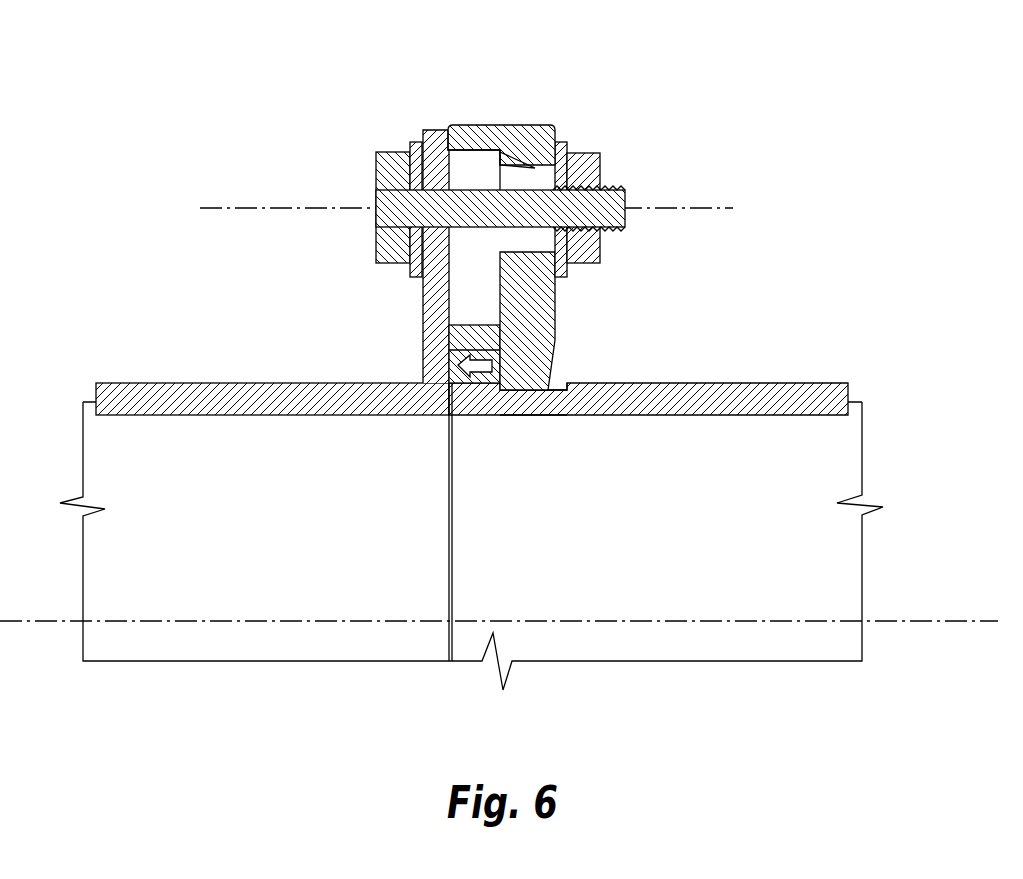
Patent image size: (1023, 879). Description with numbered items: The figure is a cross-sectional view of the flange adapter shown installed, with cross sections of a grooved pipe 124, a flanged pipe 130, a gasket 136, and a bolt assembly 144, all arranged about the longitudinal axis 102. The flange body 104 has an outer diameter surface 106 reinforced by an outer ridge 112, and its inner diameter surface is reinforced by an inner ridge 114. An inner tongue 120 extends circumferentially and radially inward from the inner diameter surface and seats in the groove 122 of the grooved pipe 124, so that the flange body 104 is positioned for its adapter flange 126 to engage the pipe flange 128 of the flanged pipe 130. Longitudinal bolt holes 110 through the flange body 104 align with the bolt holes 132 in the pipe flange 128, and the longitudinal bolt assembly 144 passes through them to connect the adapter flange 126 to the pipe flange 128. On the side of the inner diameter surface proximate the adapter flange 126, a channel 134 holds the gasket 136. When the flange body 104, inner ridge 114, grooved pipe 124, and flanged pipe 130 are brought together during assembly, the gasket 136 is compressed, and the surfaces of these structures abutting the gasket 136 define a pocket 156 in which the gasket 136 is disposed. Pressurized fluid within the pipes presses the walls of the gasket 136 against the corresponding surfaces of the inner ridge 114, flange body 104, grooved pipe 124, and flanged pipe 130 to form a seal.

The longitudinal axis 102 is at (947, 620).
The flange body 104 is at (557, 293).
The outer diameter surface 106 is at (520, 125).
The longitudinal bolt holes 110 is at (552, 127).
The outer ridge 112 is at (473, 123).
The inner ridge 114 is at (425, 335).
The inner tongue 120 is at (565, 385).
The groove 122 is at (552, 417).
The grooved pipe 124 is at (792, 383).
The adapter flange 126 is at (608, 137).
The pipe flange 128 is at (433, 127).
The flanged pipe 130 is at (133, 383).
The bolt holes 132 is at (377, 170).
The channel 134 is at (557, 328).
The gasket 136 is at (448, 357).
The longitudinal bolt assemblies 144 is at (377, 202).
The pocket 156 is at (462, 417).